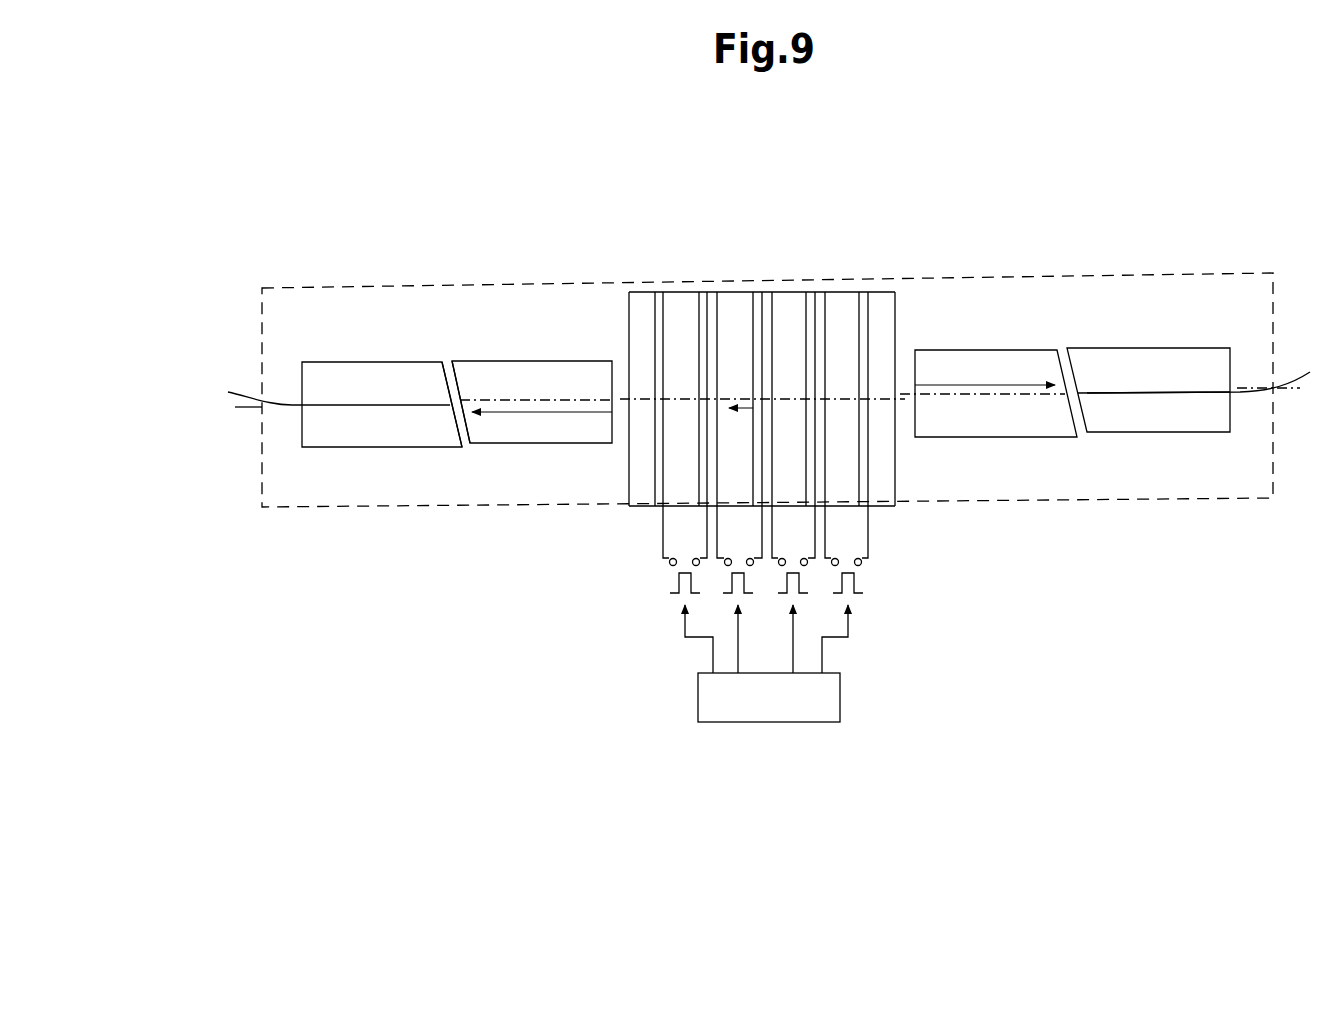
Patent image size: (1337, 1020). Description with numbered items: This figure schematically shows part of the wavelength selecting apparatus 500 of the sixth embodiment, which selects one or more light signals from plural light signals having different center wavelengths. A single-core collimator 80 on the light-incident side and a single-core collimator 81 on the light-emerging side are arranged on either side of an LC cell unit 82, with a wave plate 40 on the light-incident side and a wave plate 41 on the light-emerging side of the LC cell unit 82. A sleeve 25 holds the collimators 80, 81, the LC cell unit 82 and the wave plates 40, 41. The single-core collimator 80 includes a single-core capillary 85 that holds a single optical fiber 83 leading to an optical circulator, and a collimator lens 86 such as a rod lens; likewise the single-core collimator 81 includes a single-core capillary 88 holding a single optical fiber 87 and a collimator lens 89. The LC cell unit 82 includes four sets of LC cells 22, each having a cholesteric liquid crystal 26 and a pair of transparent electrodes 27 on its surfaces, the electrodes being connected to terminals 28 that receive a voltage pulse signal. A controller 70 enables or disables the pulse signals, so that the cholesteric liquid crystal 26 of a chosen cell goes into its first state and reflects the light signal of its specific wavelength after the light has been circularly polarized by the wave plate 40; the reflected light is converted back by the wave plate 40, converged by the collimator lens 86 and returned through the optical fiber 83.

The wavelength selecting apparatus 500 is at (1130, 200).
The sleeve 25 is at (510, 284).
The single-core collimator 80 is at (612, 351).
The single-core collimator 81 is at (1230, 344).
The LC cell unit 82 is at (688, 171).
The single optical fiber 83 is at (387, 407).
The single-core capillary 85 is at (435, 441).
The collimator lens 86 is at (538, 438).
The single optical fiber 87 is at (1163, 394).
The single-core capillary 88 is at (1110, 429).
The collimator lens 89 is at (992, 431).
The LC cell 22 is at (852, 287).
The cholesteric liquid crystal 26 is at (666, 291).
The transparent electrodes 27 is at (659, 291).
The terminals 28 is at (668, 566).
The wave plate 40 is at (632, 291).
The wave plate 41 is at (887, 291).
The controller 70 is at (843, 696).